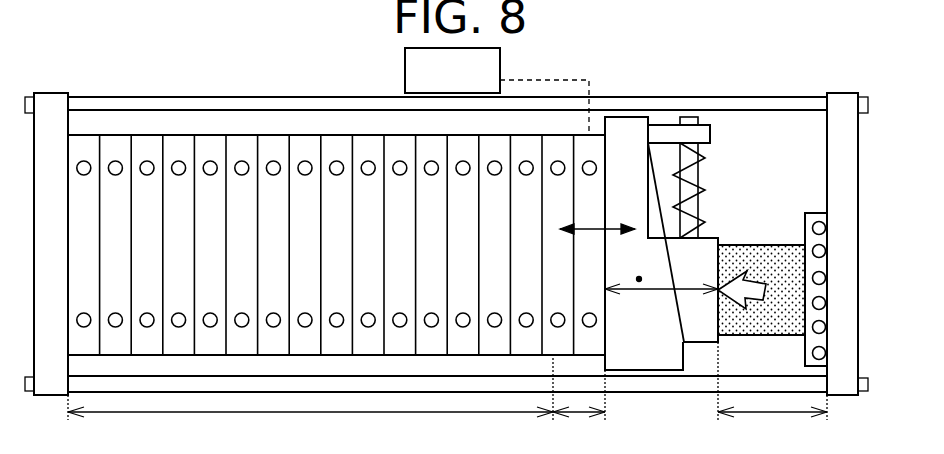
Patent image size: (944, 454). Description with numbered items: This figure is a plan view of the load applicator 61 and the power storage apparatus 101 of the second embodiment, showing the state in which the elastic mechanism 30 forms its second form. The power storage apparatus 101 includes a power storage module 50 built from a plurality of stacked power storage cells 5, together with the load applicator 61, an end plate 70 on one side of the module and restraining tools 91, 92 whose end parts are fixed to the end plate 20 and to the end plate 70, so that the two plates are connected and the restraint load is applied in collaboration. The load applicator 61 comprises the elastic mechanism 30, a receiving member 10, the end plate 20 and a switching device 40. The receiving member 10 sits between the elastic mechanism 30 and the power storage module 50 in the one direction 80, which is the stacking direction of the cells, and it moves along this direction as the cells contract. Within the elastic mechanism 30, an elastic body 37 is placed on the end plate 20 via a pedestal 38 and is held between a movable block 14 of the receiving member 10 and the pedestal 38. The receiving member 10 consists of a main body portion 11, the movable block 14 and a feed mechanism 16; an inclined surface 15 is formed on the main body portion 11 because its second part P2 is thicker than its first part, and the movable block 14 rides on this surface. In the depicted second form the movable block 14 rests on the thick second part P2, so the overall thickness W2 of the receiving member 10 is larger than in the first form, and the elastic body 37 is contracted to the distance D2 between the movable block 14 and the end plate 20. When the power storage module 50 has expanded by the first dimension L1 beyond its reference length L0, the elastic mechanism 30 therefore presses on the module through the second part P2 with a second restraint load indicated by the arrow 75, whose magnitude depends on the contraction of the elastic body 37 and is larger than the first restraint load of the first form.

The power storage apparatus 101 is at (167, 86).
The end plate 70 is at (52, 122).
The end plate 20 is at (843, 122).
The restraining tool 91 is at (203, 104).
The restraining tool 92 is at (249, 386).
The power storage module 50 is at (337, 122).
The power storage cell 5 is at (239, 145).
The switching device 40 is at (500, 70).
The load applicator 61 is at (858, 52).
The receiving member 10 is at (628, 122).
The movable block 14 is at (692, 308).
The inclined surface 15 is at (687, 336).
The main body portion 11 is at (650, 203).
The elastic mechanism 30 is at (740, 124).
The feed mechanism 16 is at (707, 193).
The elastic body 37 is at (768, 306).
The arrow (second restraint load) 75 is at (750, 283).
The pedestal 38 is at (817, 343).
The one direction 80 is at (612, 224).
The second part P2 is at (639, 278).
The thickness of the receiving member W2 is at (667, 289).
The reference length L0 is at (310, 405).
The first dimension L1 is at (579, 411).
The distance D2 is at (772, 397).